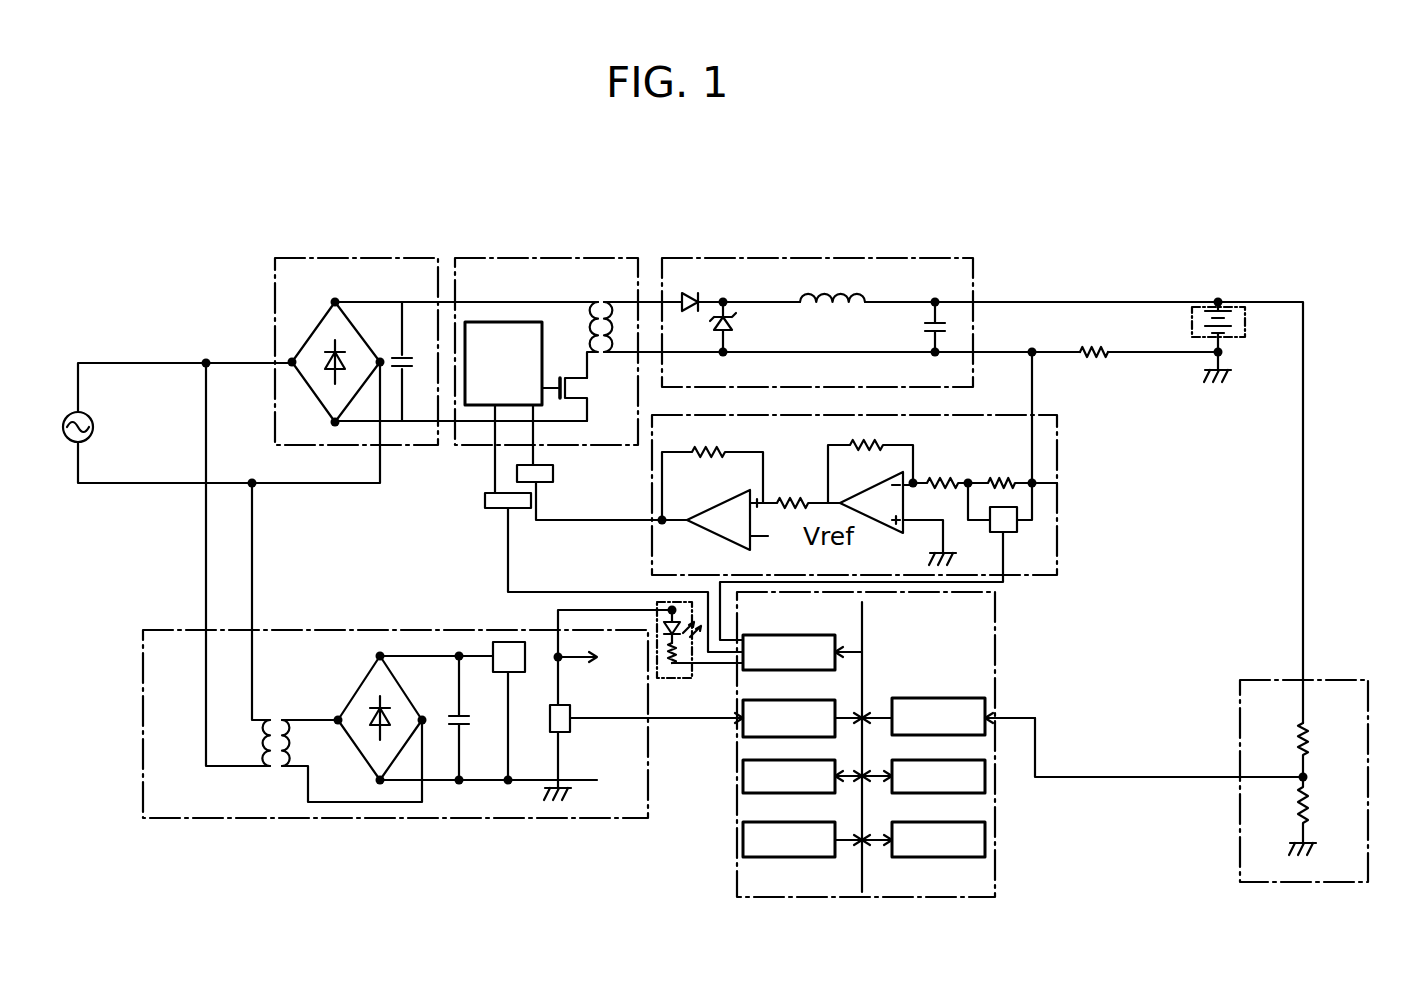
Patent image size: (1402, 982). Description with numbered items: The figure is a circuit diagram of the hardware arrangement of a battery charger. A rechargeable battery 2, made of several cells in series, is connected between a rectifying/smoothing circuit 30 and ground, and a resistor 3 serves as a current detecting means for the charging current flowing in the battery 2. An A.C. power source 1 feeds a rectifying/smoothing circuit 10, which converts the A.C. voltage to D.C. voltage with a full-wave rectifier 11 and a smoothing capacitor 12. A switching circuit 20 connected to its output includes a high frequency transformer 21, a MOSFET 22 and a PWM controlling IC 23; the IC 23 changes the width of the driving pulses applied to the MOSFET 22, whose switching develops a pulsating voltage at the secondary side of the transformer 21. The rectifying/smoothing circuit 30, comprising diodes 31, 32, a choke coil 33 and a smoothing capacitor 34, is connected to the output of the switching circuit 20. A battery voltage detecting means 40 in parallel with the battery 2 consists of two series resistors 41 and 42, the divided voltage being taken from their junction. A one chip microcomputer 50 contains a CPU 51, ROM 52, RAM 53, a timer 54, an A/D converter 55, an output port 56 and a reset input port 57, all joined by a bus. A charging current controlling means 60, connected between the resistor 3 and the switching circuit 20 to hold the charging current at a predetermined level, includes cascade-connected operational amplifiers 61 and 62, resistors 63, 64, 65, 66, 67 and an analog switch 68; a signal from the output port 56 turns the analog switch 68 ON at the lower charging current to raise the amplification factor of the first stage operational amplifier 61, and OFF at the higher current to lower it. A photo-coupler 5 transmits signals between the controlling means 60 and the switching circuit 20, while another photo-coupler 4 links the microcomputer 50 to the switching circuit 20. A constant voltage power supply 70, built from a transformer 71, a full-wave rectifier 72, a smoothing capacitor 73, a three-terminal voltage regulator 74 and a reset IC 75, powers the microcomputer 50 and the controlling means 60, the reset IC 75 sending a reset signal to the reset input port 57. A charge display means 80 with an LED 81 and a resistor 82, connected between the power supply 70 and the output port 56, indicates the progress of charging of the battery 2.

The A.C. power source 1 is at (93, 427).
The rechargeable battery 2 is at (1192, 315).
The resistor 3 is at (1100, 356).
The photo-coupler 4 is at (485, 498).
The photo-coupler 5 is at (553, 475).
The rectifying/smoothing circuit 10 is at (333, 256).
The full-wave rectifier 11 is at (312, 333).
The smoothing capacitor 12 is at (402, 352).
The switching circuit 20 is at (565, 257).
The high frequency transformer 21 is at (600, 301).
The MOSFET 22 is at (597, 388).
The PWM controlling IC 23 is at (501, 321).
The rectifying/smoothing circuit 30 is at (725, 258).
The diode 31 is at (700, 298).
The diode 32 is at (747, 325).
The choke coil 33 is at (856, 296).
The smoothing capacitor 34 is at (924, 330).
The battery voltage detecting means 40 is at (1240, 770).
The resistor 41 is at (1296, 744).
The resistor 42 is at (1300, 808).
The one chip microcomputer 50 is at (995, 670).
The CPU 51 is at (985, 835).
The ROM 52 is at (760, 857).
The RAM 53 is at (985, 775).
The timer 54 is at (760, 793).
The A/D converter 55 is at (985, 710).
The output port 56 is at (776, 634).
The reset input port 57 is at (760, 736).
The charging current controlling means 60 is at (1057, 483).
The operational amplifier 61 is at (870, 521).
The operational amplifier 62 is at (712, 538).
The resistor 63 is at (934, 481).
The resistor 64 is at (858, 445).
The resistor 65 is at (796, 501).
The resistor 66 is at (719, 452).
The resistor 67 is at (998, 481).
The analog switch 68 is at (1007, 528).
The constant voltage power supply 70 is at (305, 820).
The transformer 71 is at (274, 720).
The full-wave rectifier 72 is at (354, 694).
The smoothing capacitor 73 is at (456, 716).
The three-terminal voltage regulator 74 is at (493, 645).
The reset IC 75 is at (570, 724).
The charge display means 80 is at (672, 678).
The LED 81 is at (667, 610).
The resistor 82 is at (657, 657).